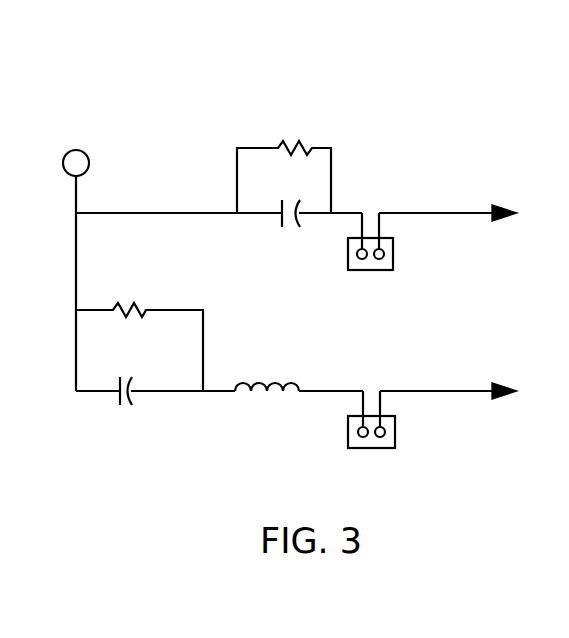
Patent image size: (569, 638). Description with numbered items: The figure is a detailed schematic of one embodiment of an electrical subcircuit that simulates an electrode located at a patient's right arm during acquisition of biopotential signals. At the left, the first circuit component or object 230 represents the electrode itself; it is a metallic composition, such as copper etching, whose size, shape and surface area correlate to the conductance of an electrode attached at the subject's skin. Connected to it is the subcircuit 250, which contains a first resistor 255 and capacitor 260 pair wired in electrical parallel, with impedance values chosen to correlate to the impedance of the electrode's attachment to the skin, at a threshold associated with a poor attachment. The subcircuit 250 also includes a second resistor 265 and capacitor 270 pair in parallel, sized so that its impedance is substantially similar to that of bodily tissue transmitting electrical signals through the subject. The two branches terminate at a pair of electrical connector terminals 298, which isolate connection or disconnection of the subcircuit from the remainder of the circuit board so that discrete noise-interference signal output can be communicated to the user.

The first circuit component or object 230 is at (89, 159).
The subcircuit 250 is at (427, 138).
The first resistor 255 is at (305, 135).
The capacitor 260 is at (295, 243).
The second resistor 265 is at (143, 302).
The capacitor 270 is at (133, 420).
The pair of electrical connector terminals 298 is at (377, 380).